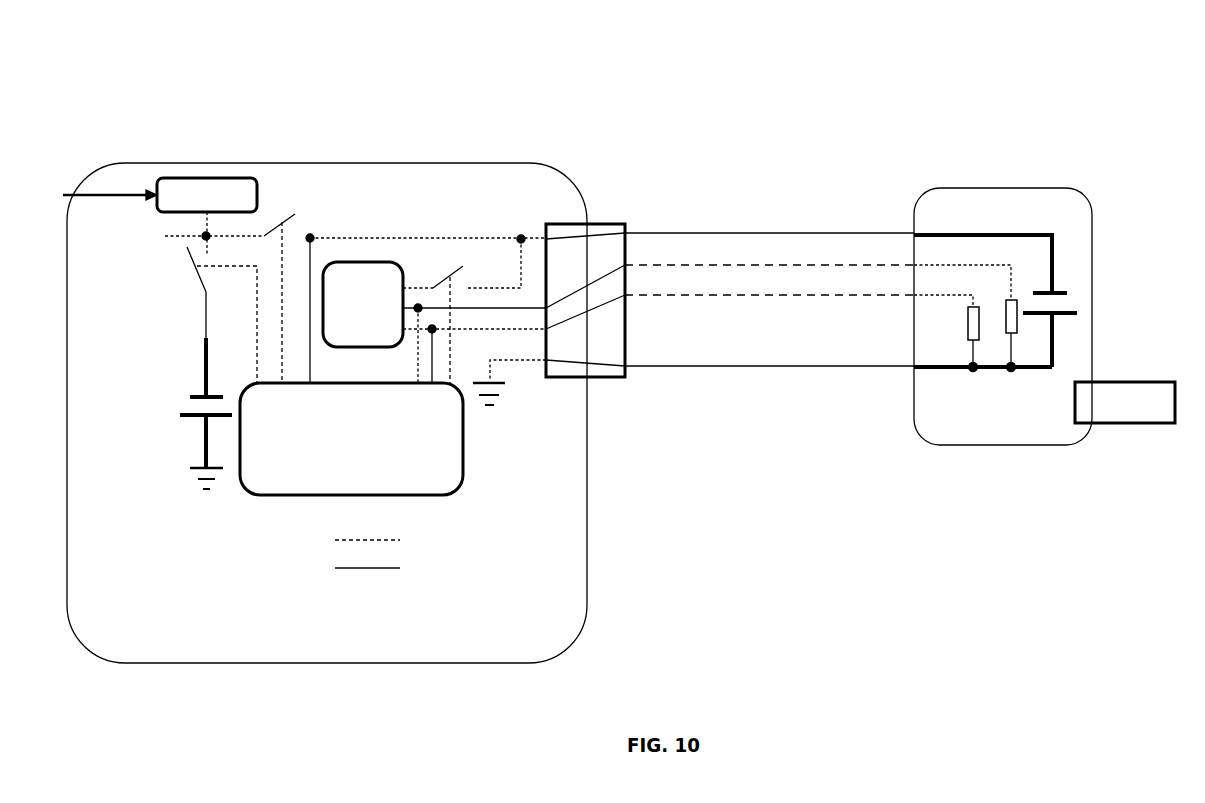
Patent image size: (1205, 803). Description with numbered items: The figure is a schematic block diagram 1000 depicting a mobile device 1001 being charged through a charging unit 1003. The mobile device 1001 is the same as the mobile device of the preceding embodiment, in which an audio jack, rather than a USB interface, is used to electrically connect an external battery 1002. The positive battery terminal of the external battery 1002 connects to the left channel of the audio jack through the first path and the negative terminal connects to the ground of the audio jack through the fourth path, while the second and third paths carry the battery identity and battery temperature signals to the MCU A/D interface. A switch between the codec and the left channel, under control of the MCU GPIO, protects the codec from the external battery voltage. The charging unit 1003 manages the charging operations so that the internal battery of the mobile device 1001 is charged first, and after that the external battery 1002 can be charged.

The schematic block diagram 1000 is at (1007, 41).
The mobile device 1001 is at (413, 162).
The external battery 1002 is at (1007, 187).
The charging unit 1003 is at (233, 177).